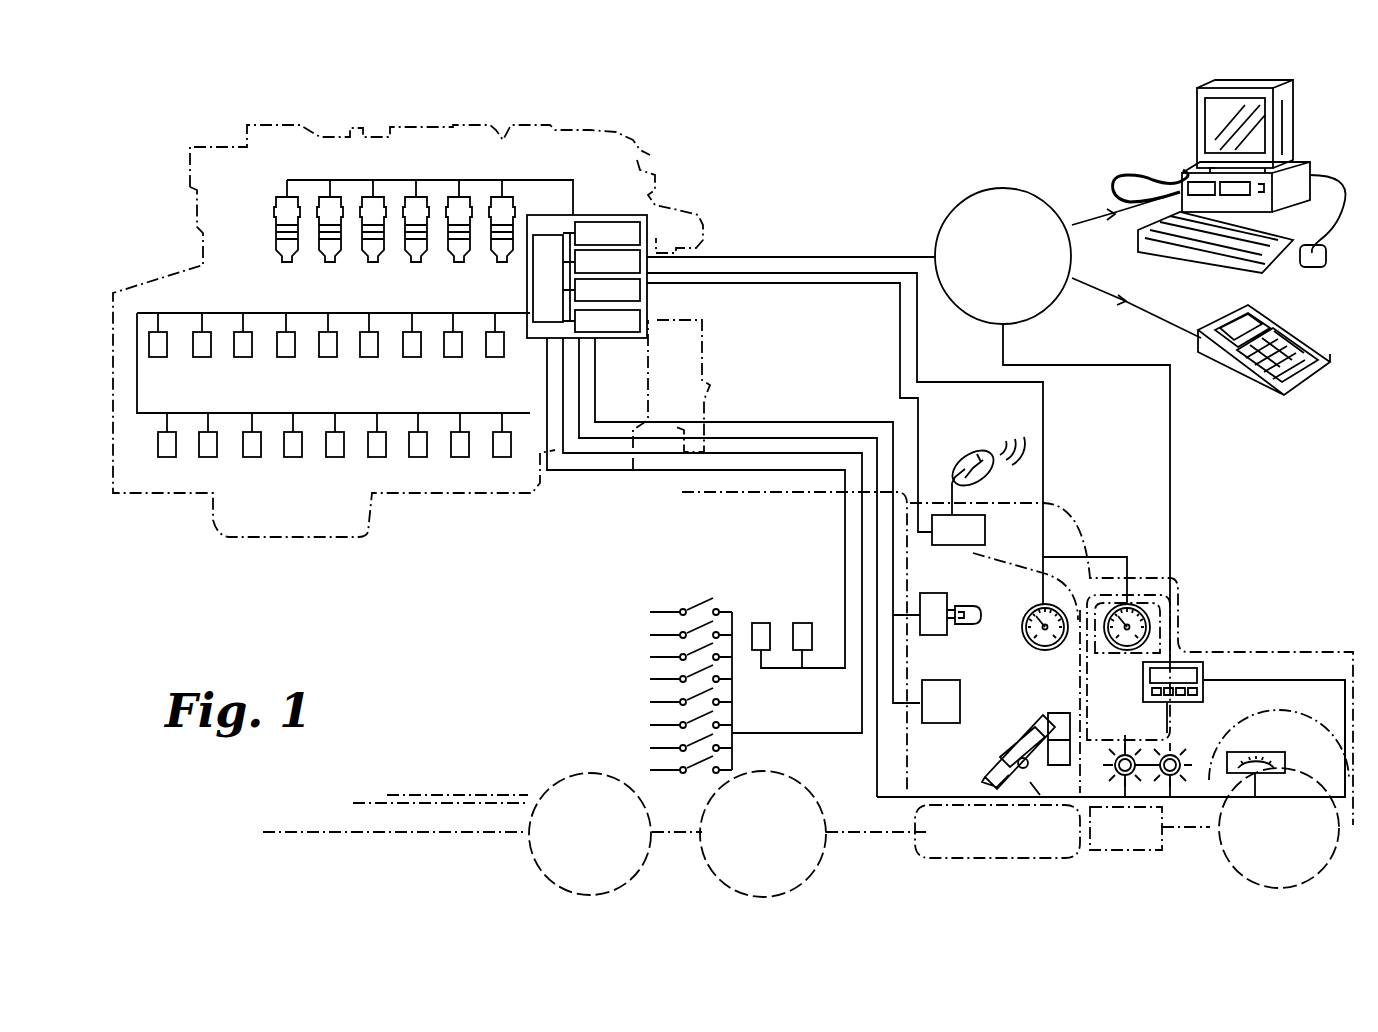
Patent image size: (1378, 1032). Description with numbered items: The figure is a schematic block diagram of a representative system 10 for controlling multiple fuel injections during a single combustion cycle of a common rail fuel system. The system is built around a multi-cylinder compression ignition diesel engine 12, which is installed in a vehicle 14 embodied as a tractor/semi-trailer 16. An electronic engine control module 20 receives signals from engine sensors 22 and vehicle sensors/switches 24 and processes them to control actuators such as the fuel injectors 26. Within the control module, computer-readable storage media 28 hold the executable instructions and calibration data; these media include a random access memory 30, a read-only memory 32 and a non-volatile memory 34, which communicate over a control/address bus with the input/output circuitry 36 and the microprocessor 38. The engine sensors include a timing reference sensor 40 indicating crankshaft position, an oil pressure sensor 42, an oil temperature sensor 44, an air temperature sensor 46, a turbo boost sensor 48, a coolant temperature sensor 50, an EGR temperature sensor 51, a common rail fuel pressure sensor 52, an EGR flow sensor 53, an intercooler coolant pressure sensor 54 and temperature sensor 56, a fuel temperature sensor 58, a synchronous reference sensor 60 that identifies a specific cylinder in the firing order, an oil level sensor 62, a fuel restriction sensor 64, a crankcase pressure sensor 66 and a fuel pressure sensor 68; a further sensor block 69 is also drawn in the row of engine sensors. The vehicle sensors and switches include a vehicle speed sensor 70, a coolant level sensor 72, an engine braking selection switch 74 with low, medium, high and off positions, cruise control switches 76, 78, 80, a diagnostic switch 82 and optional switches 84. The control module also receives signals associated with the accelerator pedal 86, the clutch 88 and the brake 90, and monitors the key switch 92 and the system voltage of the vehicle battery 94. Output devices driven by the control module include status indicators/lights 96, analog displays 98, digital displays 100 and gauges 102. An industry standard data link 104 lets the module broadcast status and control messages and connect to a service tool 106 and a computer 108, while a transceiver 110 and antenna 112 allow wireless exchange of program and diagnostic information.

The system 10 is at (853, 133).
The diesel engine 12 is at (440, 123).
The vehicle 14 is at (1075, 515).
The tractor/semi-trailer 16 is at (1242, 650).
The electronic engine control module 20 is at (593, 234).
The engine sensors 22 is at (130, 393).
The vehicle sensors/switches 24 is at (487, 657).
The fuel injectors 26 is at (338, 165).
The computer-readable storage media 28 is at (676, 216).
The random access memory 30 is at (607, 222).
The read-only memory 32 is at (657, 241).
The non-volatile memory 34 is at (645, 293).
The input/output circuitry 36 is at (645, 325).
The microprocessor 38 is at (533, 273).
The timing reference sensor 40 is at (504, 347).
The oil pressure sensor 42 is at (462, 347).
The oil temperature sensor 44 is at (421, 347).
The air temperature sensor 46 is at (378, 347).
The turbo boost sensor 48 is at (337, 347).
The coolant temperature sensor 50 is at (295, 347).
The EGR temperature sensor 51 is at (211, 347).
The common rail fuel pressure sensor 52 is at (252, 347).
The EGR flow sensor 53 is at (167, 347).
The intercooler coolant pressure sensor 54 is at (176, 446).
The intercooler coolant temperature sensor 56 is at (217, 446).
The fuel temperature sensor 58 is at (261, 446).
The synchronous reference sensor 60 is at (302, 446).
The oil level sensor 62 is at (344, 446).
The fuel restriction sensor 64 is at (386, 446).
The crankcase pressure sensor 66 is at (427, 446).
The fuel pressure sensor 68 is at (469, 446).
The vehicle speed gauge VSG 69 is at (511, 446).
The vehicle speed sensor 70 is at (812, 643).
The coolant level sensor 72 is at (770, 643).
The engine braking selection switch 74 is at (500, 725).
The cruise control switch 76 is at (550, 702).
The cruise control switch 78 is at (567, 679).
The cruise control switch 80 is at (580, 657).
The diagnostic switch 82 is at (590, 635).
The optional switches 84 is at (605, 612).
The accelerator pedal 86 is at (983, 763).
The clutch 88 is at (1042, 685).
The brake 90 is at (1007, 686).
The key switch 92 is at (935, 637).
The vehicle battery 94 is at (930, 725).
The status indicators/lights 96 is at (1195, 743).
The analog displays 98 is at (1263, 742).
The digital displays 100 is at (1140, 680).
The analog/digital gauges 102 is at (1027, 590).
The data link 104 is at (1013, 178).
The service tool 106 is at (1267, 323).
The computer 108 is at (1297, 137).
The transceiver 110 is at (987, 527).
The antenna 112 is at (952, 443).